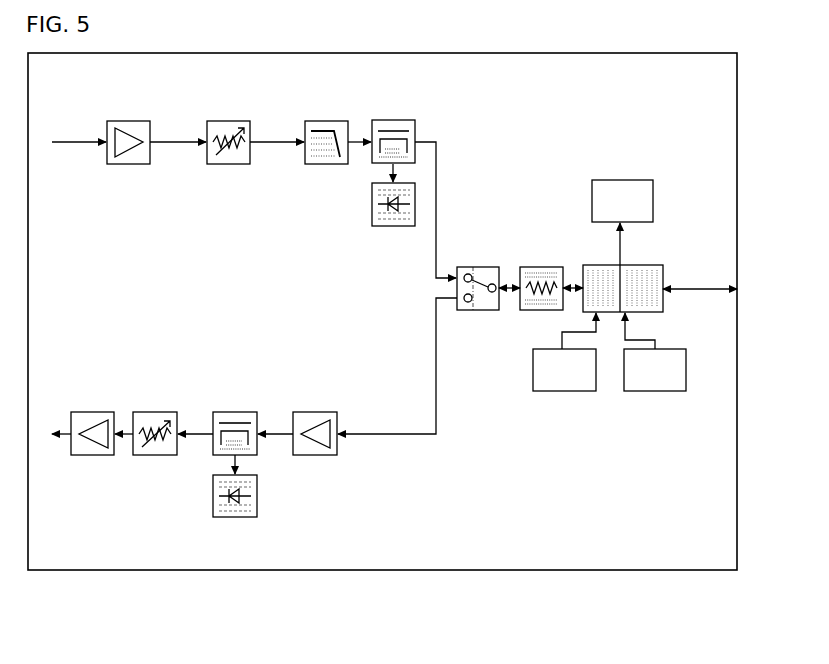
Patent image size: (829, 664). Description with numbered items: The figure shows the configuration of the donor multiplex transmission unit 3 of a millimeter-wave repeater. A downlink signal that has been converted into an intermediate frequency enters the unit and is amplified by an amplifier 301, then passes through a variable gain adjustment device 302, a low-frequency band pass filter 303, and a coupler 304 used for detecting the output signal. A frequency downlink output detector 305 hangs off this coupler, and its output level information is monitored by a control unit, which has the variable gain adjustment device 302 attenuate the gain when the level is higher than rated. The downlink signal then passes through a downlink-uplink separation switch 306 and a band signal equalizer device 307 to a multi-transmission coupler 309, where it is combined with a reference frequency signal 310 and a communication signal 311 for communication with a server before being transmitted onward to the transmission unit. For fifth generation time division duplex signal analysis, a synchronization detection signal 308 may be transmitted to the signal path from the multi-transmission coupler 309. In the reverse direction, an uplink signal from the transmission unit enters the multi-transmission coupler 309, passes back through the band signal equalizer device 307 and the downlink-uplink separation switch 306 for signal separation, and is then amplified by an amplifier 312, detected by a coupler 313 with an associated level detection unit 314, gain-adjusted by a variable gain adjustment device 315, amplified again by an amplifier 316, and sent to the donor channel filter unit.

The donor multiplex transmission unit 3 is at (372, 570).
The amplifier 301 is at (127, 121).
The variable gain adjustment device 302 is at (231, 121).
The low-frequency band pass filter 303 is at (327, 121).
The coupler 304 is at (395, 120).
The frequency downlink output detector 305 is at (395, 226).
The downlink-uplink separation switch 306 is at (470, 267).
The band signal equalizer device 307 is at (540, 267).
The synchronization detection signal 308 is at (625, 180).
The multi-transmission coupler 309 is at (655, 265).
The reference frequency signal 310 is at (565, 391).
The communication signal 311 is at (655, 391).
The amplifier 312 is at (315, 412).
The coupler 313 is at (235, 412).
The level detection unit 314 is at (235, 517).
The variable gain adjustment device 315 is at (155, 412).
The amplifier 316 is at (95, 412).